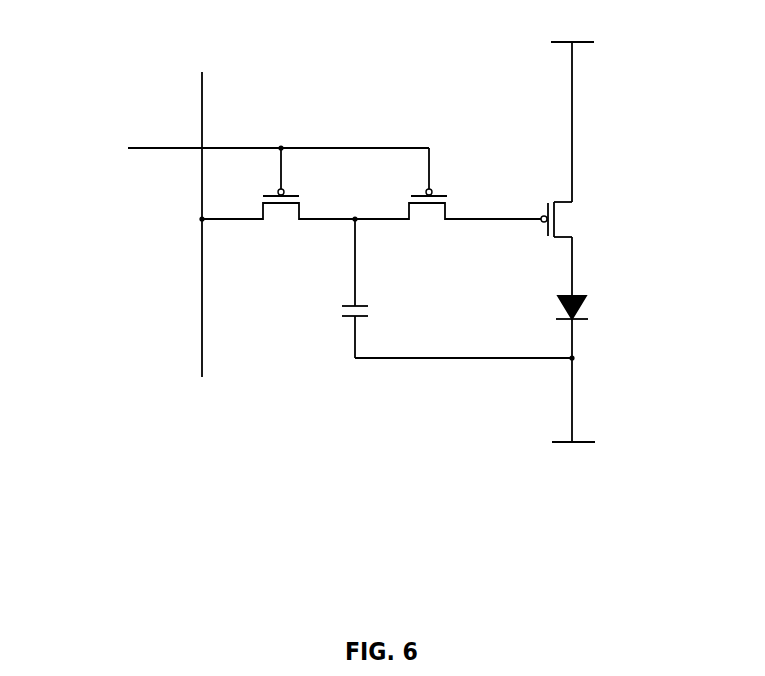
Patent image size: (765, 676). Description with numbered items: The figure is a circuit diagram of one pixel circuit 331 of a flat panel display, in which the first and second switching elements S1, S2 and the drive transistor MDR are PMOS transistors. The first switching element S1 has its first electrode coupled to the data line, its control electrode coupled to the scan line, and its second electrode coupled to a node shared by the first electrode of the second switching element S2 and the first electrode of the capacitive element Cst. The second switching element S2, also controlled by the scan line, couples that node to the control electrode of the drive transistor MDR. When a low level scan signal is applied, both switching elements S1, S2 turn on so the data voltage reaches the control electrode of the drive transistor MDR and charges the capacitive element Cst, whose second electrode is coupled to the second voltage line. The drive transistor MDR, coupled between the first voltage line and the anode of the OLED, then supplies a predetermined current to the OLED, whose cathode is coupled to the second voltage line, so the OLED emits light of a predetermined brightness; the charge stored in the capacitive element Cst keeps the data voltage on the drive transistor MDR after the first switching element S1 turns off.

The pixel circuit 331 is at (630, 92).
The first switching element S1 is at (278, 200).
The second switching element S2 is at (448, 200).
The drive transistor MDR is at (575, 219).
The organic light emitting diode OLED is at (601, 308).
The capacitive element Cst is at (337, 288).